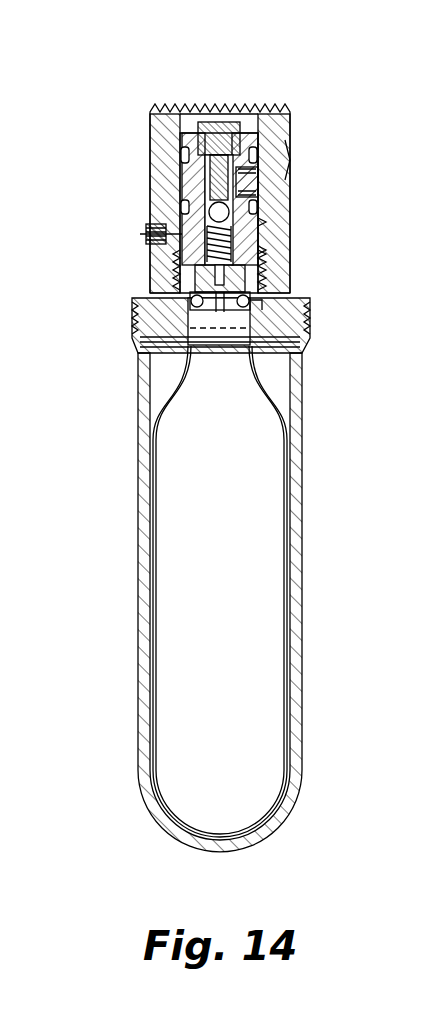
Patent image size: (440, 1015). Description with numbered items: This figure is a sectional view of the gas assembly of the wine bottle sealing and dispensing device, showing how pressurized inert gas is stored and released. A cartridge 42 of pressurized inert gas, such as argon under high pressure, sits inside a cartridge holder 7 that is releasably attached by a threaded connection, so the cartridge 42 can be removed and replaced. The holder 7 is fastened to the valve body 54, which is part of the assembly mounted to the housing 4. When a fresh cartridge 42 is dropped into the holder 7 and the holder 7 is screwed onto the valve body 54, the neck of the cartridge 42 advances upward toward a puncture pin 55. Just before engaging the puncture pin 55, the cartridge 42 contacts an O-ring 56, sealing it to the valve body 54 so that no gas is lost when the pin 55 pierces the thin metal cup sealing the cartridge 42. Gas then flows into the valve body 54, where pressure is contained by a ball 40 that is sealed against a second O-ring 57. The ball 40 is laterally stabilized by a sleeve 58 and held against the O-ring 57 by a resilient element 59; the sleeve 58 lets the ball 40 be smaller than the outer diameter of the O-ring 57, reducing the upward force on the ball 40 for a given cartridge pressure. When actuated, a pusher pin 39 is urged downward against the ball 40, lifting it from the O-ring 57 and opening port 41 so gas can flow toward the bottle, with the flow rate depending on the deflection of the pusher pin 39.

The housing 4 is at (150, 130).
The cartridge holder 7 is at (298, 493).
The pusher pin 39 is at (218, 120).
The ball 40 is at (178, 190).
The port 41 is at (290, 160).
The cartridge 42 is at (185, 626).
The valve body 54 is at (310, 300).
The puncture pin 55 is at (172, 283).
The O-ring 56 is at (145, 330).
The O-ring 57 is at (268, 202).
The sleeve 58 is at (270, 222).
The resilient element 59 is at (270, 250).